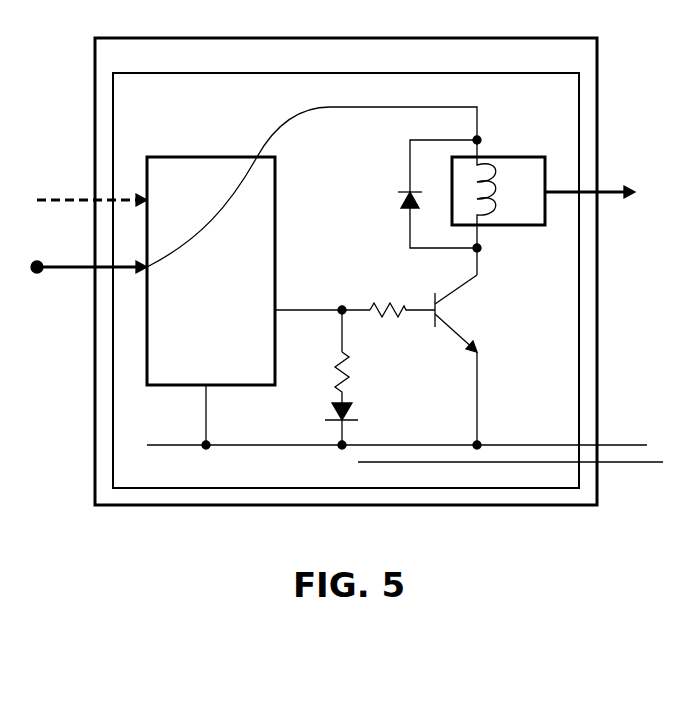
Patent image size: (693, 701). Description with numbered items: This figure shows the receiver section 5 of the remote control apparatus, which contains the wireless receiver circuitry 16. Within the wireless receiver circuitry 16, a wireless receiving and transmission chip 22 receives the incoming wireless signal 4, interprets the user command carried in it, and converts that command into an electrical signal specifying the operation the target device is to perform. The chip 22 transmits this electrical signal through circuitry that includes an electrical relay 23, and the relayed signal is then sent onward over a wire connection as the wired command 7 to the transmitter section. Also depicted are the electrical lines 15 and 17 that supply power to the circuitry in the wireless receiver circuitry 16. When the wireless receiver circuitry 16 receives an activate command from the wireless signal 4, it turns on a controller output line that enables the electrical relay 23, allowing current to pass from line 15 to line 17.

The receiver section 5 is at (346, 260).
The wireless receiver circuitry 16 is at (346, 269).
The wireless receiving and transmission chip 22 is at (211, 260).
The electrical relay 23 is at (498, 191).
The wireless signal 4 is at (92, 188).
The electrical line 15 is at (89, 255).
The wired command 7 is at (603, 192).
The electrical line 17 is at (419, 453).